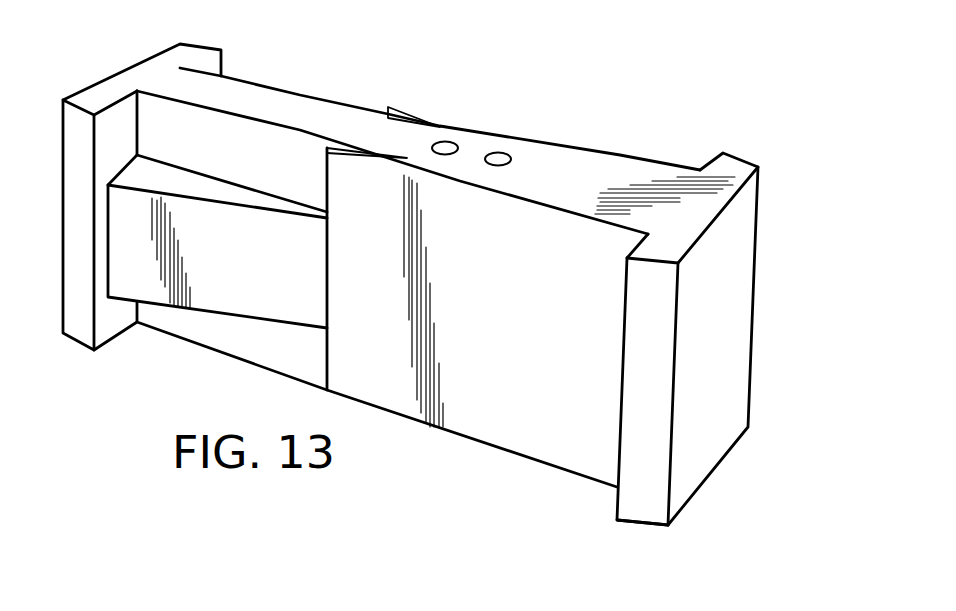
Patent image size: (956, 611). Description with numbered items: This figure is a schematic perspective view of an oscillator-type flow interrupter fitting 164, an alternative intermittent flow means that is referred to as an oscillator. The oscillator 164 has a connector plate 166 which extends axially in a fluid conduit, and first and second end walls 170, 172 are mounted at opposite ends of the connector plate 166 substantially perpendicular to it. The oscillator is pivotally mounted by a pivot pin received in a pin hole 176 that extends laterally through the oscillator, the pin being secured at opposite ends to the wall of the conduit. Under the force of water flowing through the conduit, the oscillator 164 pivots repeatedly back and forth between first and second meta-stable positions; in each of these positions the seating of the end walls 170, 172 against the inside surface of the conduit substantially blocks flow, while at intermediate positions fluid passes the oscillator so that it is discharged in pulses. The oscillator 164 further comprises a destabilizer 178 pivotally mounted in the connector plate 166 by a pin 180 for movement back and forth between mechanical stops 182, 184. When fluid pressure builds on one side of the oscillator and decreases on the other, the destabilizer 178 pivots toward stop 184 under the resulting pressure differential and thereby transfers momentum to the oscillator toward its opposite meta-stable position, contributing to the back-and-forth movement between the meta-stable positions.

The flow interrupter fitting 164 is at (424, 284).
The connector plate 166 is at (590, 158).
The first end wall 170 is at (737, 349).
The second end wall 172 is at (100, 92).
The pin hole 176 is at (497, 157).
The destabilizer 178 is at (207, 298).
The pin 180 is at (447, 147).
The mechanical stop 182 is at (387, 108).
The mechanical stop 184 is at (332, 152).